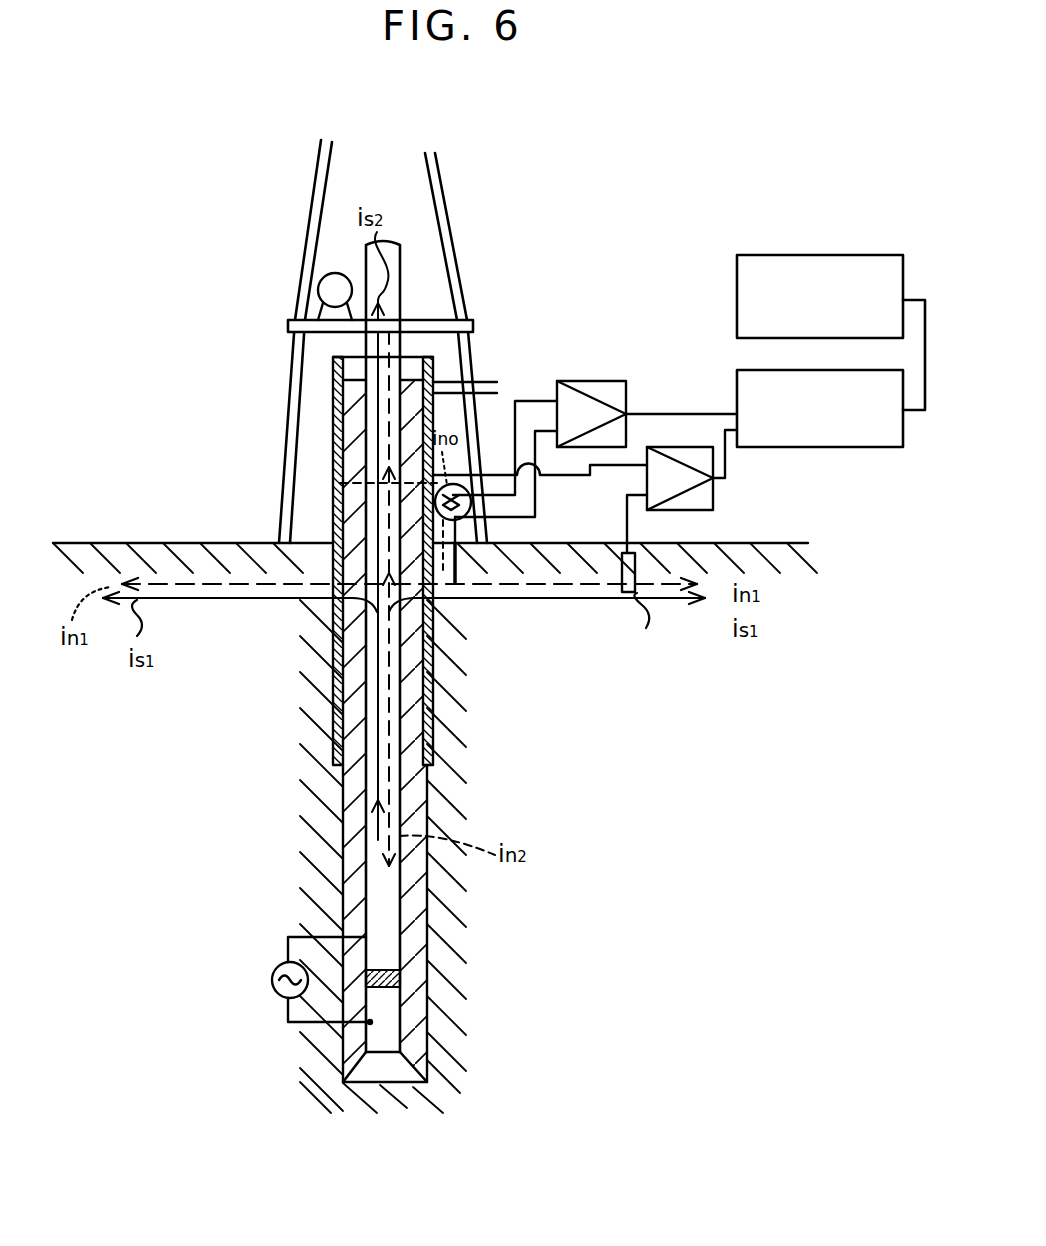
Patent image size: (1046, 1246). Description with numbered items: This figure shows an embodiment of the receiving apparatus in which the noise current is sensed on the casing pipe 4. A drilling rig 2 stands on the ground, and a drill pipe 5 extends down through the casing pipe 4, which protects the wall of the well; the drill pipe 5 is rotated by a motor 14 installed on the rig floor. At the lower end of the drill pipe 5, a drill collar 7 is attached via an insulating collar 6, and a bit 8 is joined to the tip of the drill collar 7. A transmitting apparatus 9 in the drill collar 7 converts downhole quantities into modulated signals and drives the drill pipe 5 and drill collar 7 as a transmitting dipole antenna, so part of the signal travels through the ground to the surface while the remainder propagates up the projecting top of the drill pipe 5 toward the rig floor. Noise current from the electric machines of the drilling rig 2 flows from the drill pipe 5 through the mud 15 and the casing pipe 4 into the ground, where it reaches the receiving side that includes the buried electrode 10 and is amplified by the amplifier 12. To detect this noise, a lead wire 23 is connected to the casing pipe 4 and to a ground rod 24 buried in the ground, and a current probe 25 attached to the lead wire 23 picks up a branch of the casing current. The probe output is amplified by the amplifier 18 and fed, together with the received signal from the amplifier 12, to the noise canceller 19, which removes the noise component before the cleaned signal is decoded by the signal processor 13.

The drilling rig 2 is at (474, 324).
The casing pipe 4 is at (333, 738).
The drill pipe 5 is at (393, 925).
The insulating collar 6 is at (398, 978).
The drill collar 7 is at (378, 1033).
The bit 8 is at (393, 1083).
The transmitting apparatus 9 is at (272, 990).
The electrode 10 is at (645, 578).
The amplifier 12 is at (713, 500).
The signal processor 13 is at (852, 255).
The motor 14 is at (320, 292).
The mud 15 is at (343, 845).
The amplifier 18 is at (607, 381).
The noise canceller 19 is at (855, 447).
The lead wire 23 is at (470, 512).
The ground rod 24 is at (470, 577).
The current probe 25 is at (473, 476).